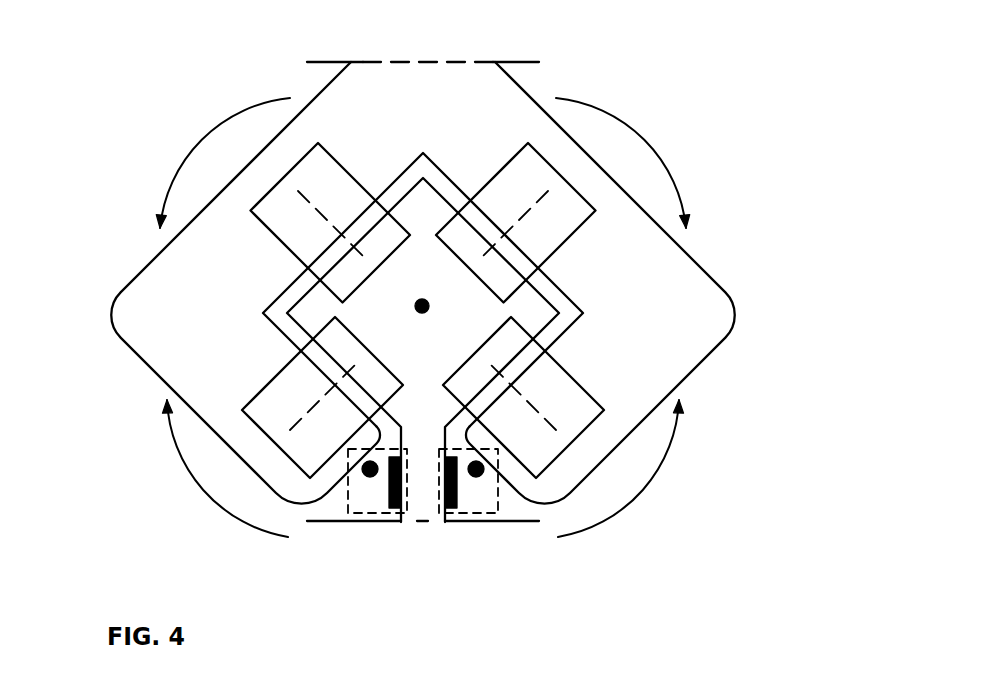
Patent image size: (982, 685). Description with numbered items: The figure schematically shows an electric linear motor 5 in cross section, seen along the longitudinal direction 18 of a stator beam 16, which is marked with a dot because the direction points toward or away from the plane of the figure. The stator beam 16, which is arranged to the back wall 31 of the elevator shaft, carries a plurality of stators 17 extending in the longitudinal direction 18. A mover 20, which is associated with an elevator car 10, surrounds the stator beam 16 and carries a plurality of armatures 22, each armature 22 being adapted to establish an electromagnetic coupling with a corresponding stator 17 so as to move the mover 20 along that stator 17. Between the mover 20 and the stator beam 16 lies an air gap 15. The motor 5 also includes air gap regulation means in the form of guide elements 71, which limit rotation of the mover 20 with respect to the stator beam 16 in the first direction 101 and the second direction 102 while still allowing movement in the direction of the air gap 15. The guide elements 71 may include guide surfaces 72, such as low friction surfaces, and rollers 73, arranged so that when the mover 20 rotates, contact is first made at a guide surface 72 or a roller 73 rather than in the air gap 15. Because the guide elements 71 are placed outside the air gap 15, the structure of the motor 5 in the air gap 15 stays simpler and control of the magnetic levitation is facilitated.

The electric linear motor 5 is at (128, 87).
The elevator car 10 is at (408, 52).
The air gap 15 is at (320, 262).
The stator beam 16 is at (433, 360).
The stator 17 is at (362, 277).
The longitudinal direction 18 is at (422, 298).
The mover 20 is at (147, 265).
The armature 22 is at (353, 176).
The back wall 31 is at (407, 561).
The guide element 71 is at (358, 514).
The guide surface 72 is at (396, 509).
The roller 73 is at (360, 465).
The first direction 101 is at (643, 143).
The second direction 102 is at (185, 172).